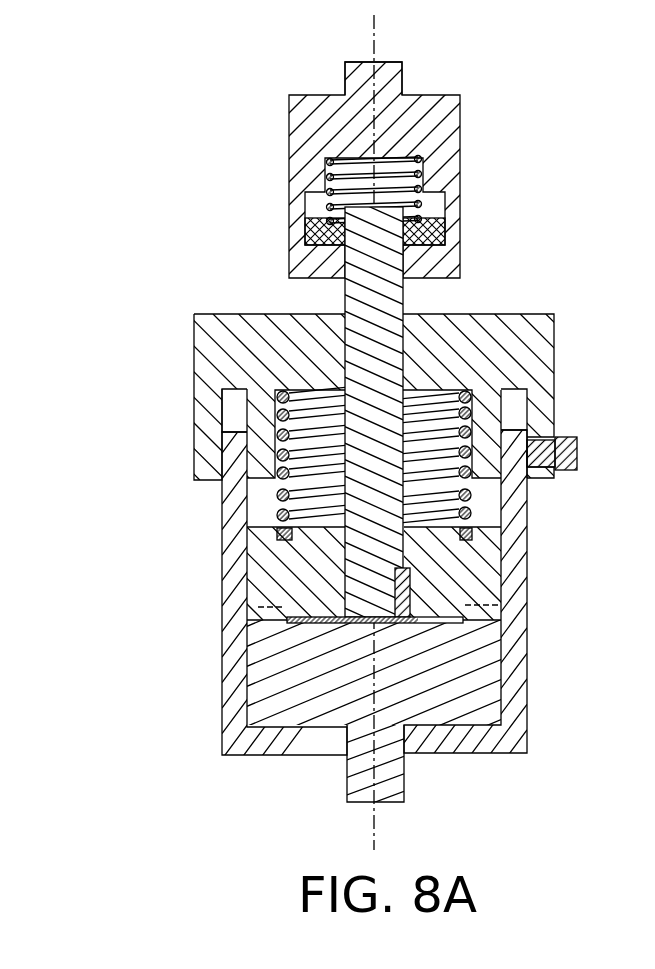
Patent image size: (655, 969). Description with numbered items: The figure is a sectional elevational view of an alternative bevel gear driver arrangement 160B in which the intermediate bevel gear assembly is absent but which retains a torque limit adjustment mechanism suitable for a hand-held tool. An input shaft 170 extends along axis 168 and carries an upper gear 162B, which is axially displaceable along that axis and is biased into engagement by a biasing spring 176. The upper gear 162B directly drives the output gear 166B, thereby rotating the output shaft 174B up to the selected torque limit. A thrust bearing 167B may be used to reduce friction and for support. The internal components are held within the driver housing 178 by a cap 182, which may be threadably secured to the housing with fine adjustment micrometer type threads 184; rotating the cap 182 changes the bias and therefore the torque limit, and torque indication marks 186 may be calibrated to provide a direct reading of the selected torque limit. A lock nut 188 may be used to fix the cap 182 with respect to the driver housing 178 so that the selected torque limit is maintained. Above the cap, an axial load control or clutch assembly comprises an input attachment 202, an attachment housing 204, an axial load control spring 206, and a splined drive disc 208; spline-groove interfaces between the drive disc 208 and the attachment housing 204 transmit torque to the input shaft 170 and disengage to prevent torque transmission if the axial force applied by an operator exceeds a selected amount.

The bevel gear driver arrangement 160B is at (118, 184).
The upper gear 162B is at (287, 577).
The output gear 166B is at (308, 673).
The thrust bearing 167B is at (250, 649).
The axis 168 is at (374, 42).
The input shaft 170 is at (362, 294).
The output shaft 174B is at (347, 800).
The biasing spring 176 is at (530, 500).
The driver housing 178 is at (512, 512).
The cap 182 is at (518, 332).
The fine adjustment threads 184 is at (223, 484).
The torque indication marks 186 is at (223, 502).
The lock nut 188 is at (568, 437).
The input attachment 202 is at (390, 78).
The attachment housing 204 is at (427, 115).
The axial load control spring 206 is at (325, 180).
The splined drive disc 208 is at (323, 248).